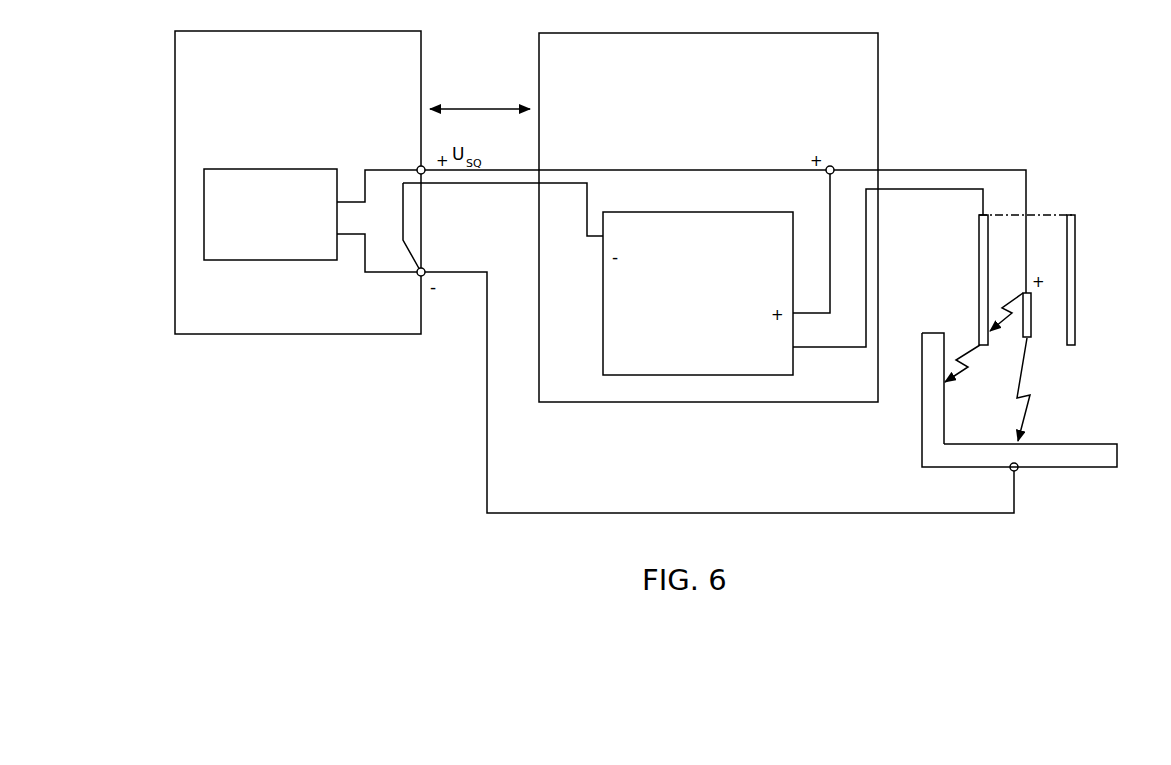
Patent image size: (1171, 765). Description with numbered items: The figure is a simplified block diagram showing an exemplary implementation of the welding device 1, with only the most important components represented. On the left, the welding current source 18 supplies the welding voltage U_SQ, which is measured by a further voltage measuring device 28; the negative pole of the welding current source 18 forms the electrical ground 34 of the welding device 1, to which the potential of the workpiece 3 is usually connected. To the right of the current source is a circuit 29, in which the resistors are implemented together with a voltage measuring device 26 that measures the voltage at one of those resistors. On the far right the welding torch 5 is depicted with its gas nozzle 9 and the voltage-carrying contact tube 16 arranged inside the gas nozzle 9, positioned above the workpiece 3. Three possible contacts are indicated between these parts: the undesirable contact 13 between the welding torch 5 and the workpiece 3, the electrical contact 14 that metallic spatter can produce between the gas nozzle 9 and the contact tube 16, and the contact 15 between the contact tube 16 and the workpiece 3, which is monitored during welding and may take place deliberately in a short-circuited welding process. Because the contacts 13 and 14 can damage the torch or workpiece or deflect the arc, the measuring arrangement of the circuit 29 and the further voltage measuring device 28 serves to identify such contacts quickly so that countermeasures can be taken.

The welding device 1 is at (944, 64).
The workpiece 3 is at (1118, 455).
The welding torch 5 is at (1070, 207).
The gas nozzle 9 is at (1077, 333).
The contact 13 is at (962, 352).
The electrical contact 14 is at (1003, 302).
The contact 15 is at (1030, 410).
The contact tube 16 is at (1038, 312).
The welding current source 18 is at (423, 46).
The voltage measuring device 26 is at (653, 356).
The further voltage measuring device 28 is at (263, 238).
The circuit 29 is at (707, 356).
The ground 34 is at (418, 278).